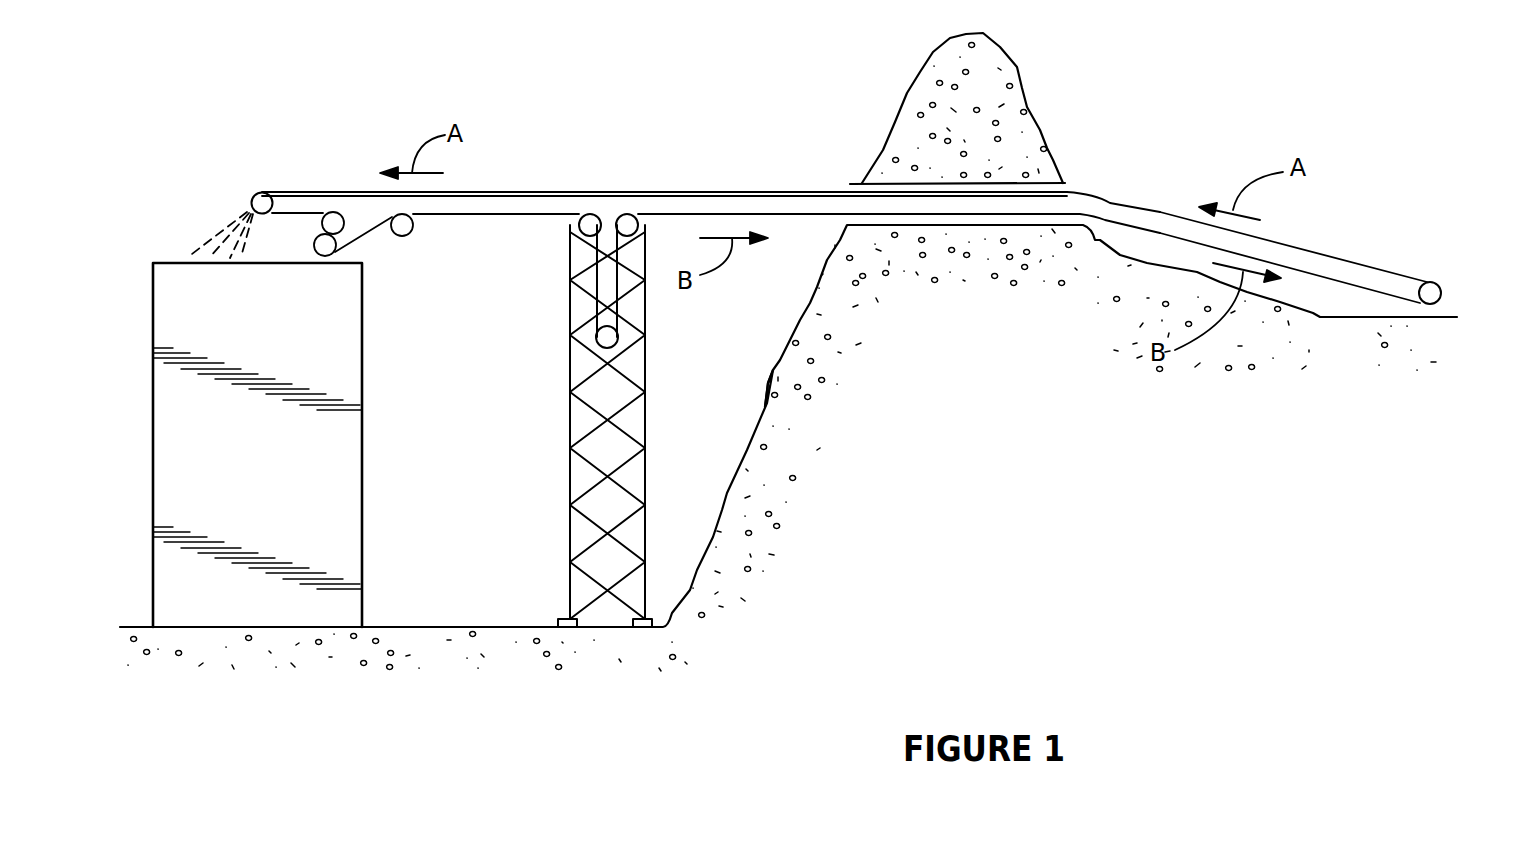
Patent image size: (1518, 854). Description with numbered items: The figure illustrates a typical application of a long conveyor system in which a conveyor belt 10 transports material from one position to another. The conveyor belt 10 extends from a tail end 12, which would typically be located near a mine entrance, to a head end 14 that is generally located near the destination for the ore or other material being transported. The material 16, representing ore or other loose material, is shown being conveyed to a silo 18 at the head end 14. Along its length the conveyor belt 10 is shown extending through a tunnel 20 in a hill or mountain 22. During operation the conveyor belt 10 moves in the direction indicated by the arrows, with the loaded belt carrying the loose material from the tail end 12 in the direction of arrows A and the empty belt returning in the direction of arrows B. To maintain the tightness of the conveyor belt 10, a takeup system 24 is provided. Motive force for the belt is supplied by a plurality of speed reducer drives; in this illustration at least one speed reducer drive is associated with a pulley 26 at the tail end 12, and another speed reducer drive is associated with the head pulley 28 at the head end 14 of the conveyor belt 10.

The conveyor belt 10 is at (692, 192).
The tail end 12 is at (1357, 260).
The head end 14 is at (312, 192).
The material 16 is at (192, 250).
The silo 18 is at (363, 352).
The tunnel 20 is at (860, 187).
The hill or mountain 22 is at (1013, 97).
The takeup system 24 is at (645, 355).
The pulley 26 is at (1440, 292).
The head pulley 28 is at (248, 198).